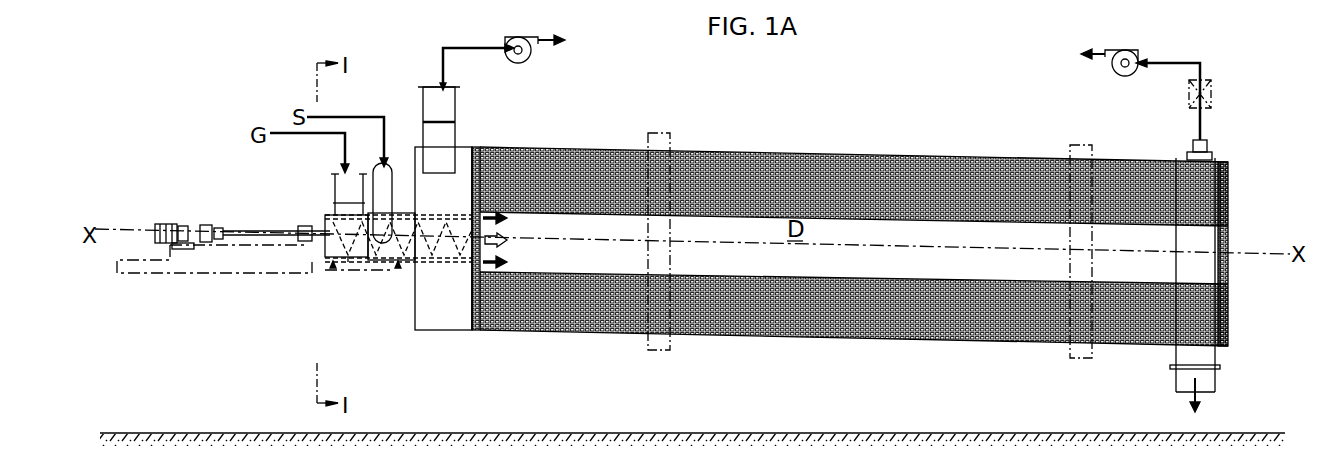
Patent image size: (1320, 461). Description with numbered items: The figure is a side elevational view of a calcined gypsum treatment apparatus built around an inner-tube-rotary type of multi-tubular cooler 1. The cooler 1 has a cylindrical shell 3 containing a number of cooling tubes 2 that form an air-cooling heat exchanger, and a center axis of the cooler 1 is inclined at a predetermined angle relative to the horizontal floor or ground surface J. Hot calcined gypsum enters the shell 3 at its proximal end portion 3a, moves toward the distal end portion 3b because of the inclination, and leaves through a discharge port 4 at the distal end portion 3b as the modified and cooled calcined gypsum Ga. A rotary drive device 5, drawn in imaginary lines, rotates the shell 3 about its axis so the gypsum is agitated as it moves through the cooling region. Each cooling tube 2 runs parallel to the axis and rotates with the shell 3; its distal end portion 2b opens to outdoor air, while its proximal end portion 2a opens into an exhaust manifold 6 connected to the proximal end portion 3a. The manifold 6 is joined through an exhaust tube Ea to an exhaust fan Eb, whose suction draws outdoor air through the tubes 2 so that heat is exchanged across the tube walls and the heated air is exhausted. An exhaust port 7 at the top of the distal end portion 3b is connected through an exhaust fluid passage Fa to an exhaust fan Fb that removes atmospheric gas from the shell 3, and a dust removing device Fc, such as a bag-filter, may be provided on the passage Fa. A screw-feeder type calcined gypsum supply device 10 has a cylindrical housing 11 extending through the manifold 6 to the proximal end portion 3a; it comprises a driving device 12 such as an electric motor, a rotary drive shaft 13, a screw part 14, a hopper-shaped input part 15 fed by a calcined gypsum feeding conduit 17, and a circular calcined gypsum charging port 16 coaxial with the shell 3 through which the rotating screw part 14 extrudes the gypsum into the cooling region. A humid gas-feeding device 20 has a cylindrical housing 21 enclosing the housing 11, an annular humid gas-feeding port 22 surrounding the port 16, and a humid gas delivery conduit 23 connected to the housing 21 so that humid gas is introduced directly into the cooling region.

The multi-tubular cooler 1 is at (816, 82).
The cooling tubes 2 is at (750, 152).
The proximal end portion of cooling tube 2a is at (474, 314).
The distal end portion of cooling tube 2b is at (1228, 304).
The cylindrical shell 3 is at (902, 155).
The proximal end portion of shell 3a is at (470, 335).
The distal end portion of shell 3b is at (1225, 348).
The discharge port 4 is at (1175, 378).
The rotary drive device 5 is at (658, 130).
The exhaust manifold 6 is at (468, 150).
The exhaust port 7 is at (1190, 148).
The calcined gypsum supply device 10 is at (333, 268).
The cylindrical housing 11 is at (348, 259).
The driving device 12 is at (190, 226).
The rotary drive shaft 13 is at (252, 238).
The screw part 14 is at (478, 258).
The input part 15 is at (327, 216).
The calcined gypsum charging port 16 is at (492, 228).
The calcined gypsum feeding conduit 17 is at (332, 176).
The humid gas-feeding device 20 is at (398, 268).
The cylindrical housing 21 is at (414, 272).
The humid gas-feeding port 22 is at (484, 212).
The humid gas delivery conduit 23 is at (393, 202).
The exhaust tube Ea is at (443, 54).
The exhaust fan Eb is at (523, 62).
The exhaust fluid passage Fa is at (1200, 64).
The exhaust fan Fb is at (1122, 74).
The dust removing device Fc is at (1212, 95).
The calcined gypsum after modification and cooling Ga is at (1195, 407).
The horizontal floor or ground surface J is at (190, 432).